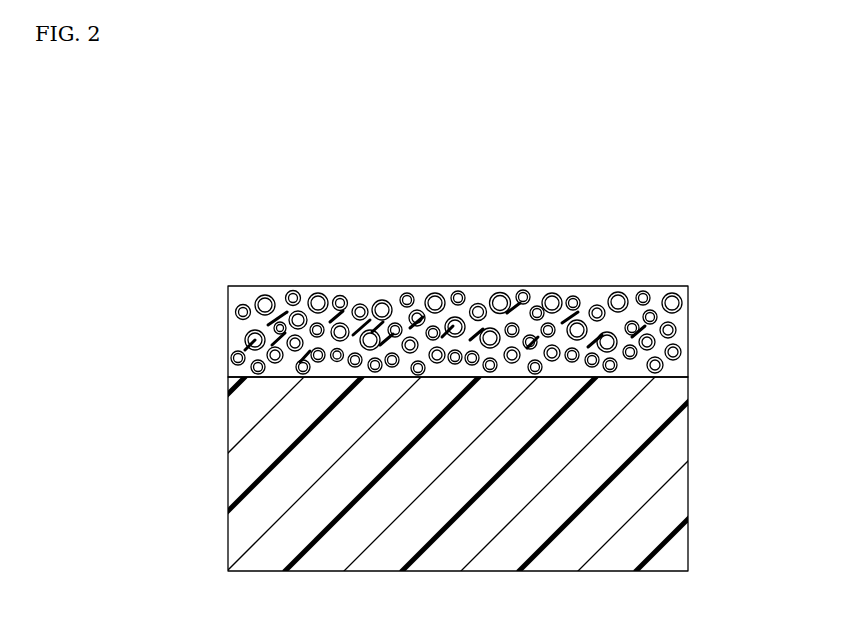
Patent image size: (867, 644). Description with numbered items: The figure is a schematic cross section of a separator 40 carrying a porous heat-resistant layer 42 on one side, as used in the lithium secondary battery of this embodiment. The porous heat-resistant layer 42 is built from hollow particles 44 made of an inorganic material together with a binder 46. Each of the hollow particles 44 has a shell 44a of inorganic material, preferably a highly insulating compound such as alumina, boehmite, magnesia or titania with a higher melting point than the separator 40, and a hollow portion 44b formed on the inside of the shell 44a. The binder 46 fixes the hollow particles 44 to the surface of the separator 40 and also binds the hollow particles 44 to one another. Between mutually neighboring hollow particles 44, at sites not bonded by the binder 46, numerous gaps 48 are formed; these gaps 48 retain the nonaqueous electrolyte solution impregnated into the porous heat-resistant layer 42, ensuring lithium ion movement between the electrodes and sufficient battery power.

The separator 40 is at (676, 492).
The porous heat-resistant layer 42 is at (657, 283).
The hollow particles 44 is at (393, 286).
The shell 44a is at (368, 285).
The hollow portion 44b is at (377, 286).
The binder 46 is at (275, 287).
The gaps 48 is at (456, 286).